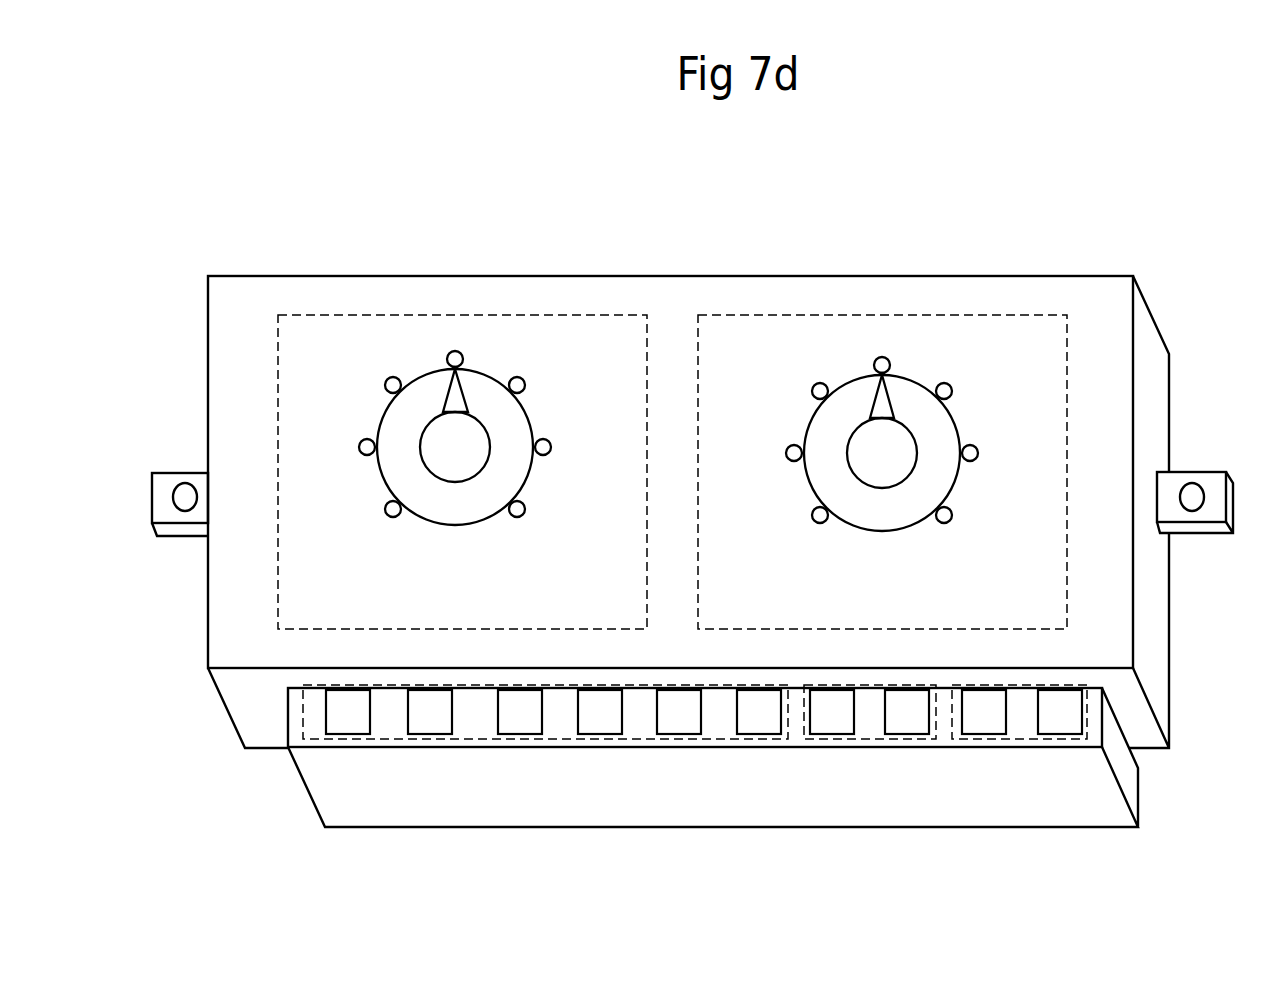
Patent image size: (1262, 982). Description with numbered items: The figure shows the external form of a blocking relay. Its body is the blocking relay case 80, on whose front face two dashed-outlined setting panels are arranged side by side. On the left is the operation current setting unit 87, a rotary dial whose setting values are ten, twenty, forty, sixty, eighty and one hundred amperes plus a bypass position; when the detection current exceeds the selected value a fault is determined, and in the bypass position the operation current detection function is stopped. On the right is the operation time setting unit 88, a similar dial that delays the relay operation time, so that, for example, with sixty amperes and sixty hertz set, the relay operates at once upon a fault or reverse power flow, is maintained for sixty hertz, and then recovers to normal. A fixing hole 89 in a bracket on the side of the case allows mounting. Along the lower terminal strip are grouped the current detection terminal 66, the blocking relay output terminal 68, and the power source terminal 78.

The blocking relay case 80 is at (1109, 276).
The operation current setting unit 87 is at (438, 315).
The operation time setting unit 88 is at (808, 315).
The fixing hole 89 is at (1190, 472).
The current detection terminal 66 is at (354, 740).
The blocking relay output terminal 68 is at (827, 740).
The power source terminal 78 is at (1025, 738).